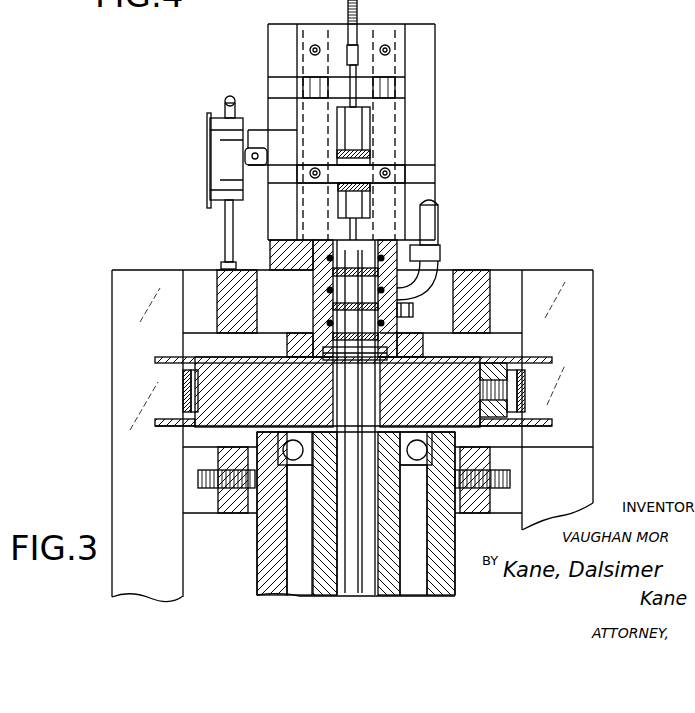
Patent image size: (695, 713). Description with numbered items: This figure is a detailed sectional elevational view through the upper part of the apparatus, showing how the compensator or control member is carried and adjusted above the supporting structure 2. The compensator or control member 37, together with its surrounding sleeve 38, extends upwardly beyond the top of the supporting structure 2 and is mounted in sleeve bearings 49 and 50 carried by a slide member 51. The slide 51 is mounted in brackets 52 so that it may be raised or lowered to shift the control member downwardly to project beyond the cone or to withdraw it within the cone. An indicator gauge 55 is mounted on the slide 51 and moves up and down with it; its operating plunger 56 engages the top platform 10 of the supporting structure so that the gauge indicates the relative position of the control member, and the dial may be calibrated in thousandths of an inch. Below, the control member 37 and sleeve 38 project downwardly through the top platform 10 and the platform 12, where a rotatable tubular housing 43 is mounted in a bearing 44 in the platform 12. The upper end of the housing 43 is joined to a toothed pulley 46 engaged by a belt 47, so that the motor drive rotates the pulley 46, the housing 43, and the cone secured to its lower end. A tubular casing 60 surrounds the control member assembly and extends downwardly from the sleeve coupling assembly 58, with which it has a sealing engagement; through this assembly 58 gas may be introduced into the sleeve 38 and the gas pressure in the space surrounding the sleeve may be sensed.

The supporting structure 2 is at (108, 372).
The top platform 10 is at (490, 282).
The platform 12 is at (195, 462).
The compensator or control member 37 is at (348, 45).
The sleeve 38 is at (268, 84).
The rotatable tubular housing 43 is at (313, 537).
The bearing 44 is at (560, 447).
The toothed pulley 46 is at (530, 355).
The belt 47 is at (520, 392).
The sleeve bearing 49 is at (365, 130).
The sleeve bearing 50 is at (372, 205).
The slide member 51 is at (378, 165).
The bracket 52 is at (428, 92).
The indicator gauge 55 is at (210, 137).
The operating plunger 56 is at (225, 220).
The sleeve coupling assembly 58 is at (300, 308).
The tubular casing 60 is at (357, 595).